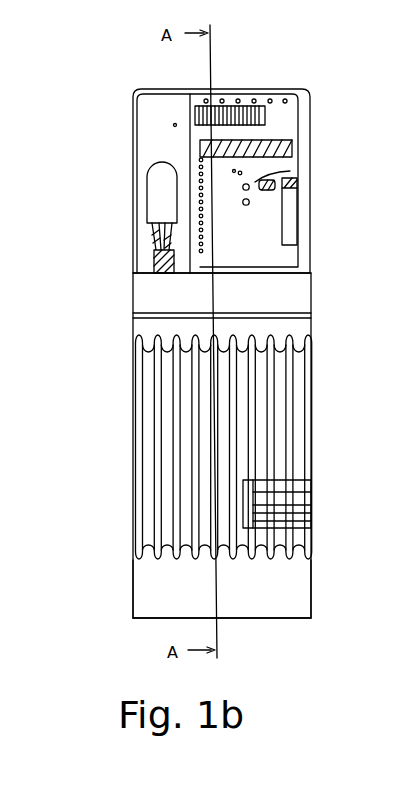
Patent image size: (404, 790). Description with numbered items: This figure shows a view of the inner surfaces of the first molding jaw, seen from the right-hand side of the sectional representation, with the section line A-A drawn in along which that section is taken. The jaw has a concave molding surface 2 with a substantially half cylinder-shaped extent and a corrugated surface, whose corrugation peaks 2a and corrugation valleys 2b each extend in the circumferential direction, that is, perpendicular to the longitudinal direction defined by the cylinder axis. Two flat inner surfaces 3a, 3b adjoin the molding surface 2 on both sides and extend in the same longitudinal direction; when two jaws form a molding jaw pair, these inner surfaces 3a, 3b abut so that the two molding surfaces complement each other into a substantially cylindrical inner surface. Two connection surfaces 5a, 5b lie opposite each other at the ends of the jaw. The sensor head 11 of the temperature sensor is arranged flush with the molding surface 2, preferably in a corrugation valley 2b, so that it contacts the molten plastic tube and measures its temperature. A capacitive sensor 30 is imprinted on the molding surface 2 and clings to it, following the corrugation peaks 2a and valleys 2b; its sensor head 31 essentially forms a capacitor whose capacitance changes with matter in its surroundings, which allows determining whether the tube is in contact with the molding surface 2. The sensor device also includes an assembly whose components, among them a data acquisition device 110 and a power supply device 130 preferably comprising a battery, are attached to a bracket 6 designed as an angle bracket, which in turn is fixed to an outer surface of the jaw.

The power supply device 130 is at (147, 178).
The data acquisition device 110 is at (270, 185).
The inner surface 3a is at (272, 297).
The bracket 6 is at (314, 312).
The sensor head 11 is at (213, 379).
The molding surface 2 is at (171, 447).
The corrugation peaks 2a is at (167, 473).
The corrugation valleys 2b is at (173, 510).
The capacitive sensor 30 is at (312, 490).
The sensor head 31 is at (298, 503).
The connection surface 5a is at (133, 597).
The connection surface 5b is at (316, 585).
The inner surface 3b is at (267, 598).